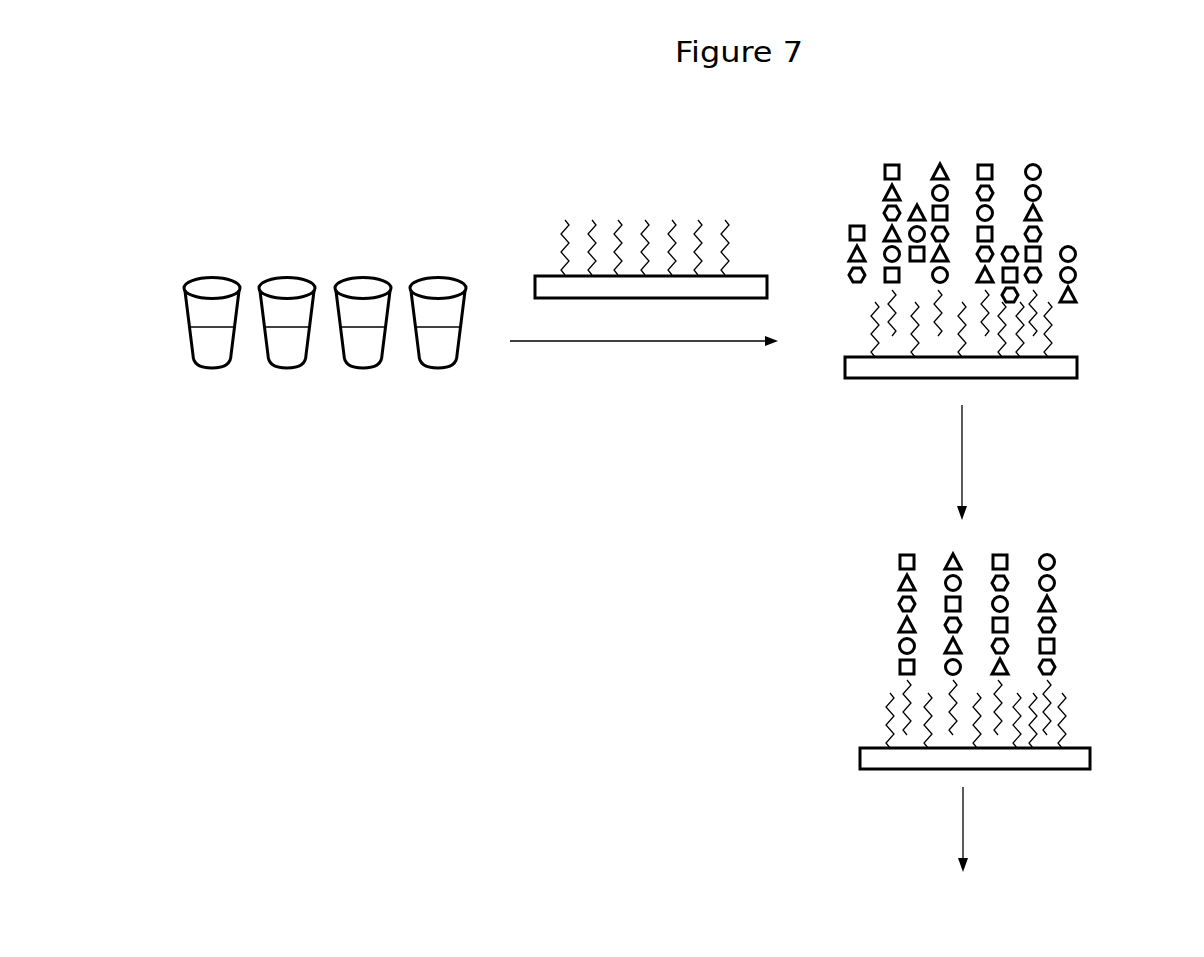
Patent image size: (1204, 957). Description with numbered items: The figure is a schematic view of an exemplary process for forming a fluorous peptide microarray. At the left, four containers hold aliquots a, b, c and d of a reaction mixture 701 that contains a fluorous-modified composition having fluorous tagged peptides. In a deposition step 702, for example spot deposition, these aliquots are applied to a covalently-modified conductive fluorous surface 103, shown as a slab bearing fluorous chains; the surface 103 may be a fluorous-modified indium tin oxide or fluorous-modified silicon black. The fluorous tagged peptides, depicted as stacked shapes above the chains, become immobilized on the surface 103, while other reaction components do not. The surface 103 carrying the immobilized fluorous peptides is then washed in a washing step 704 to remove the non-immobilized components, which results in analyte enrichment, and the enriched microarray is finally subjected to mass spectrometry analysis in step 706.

The covalently-modified conductive fluorous surface 103 is at (512, 285).
The reaction mixture 701 is at (312, 445).
The deposition step 702 is at (672, 410).
The washing step 704 is at (866, 485).
The mass spectrometry analysis step 706 is at (889, 861).